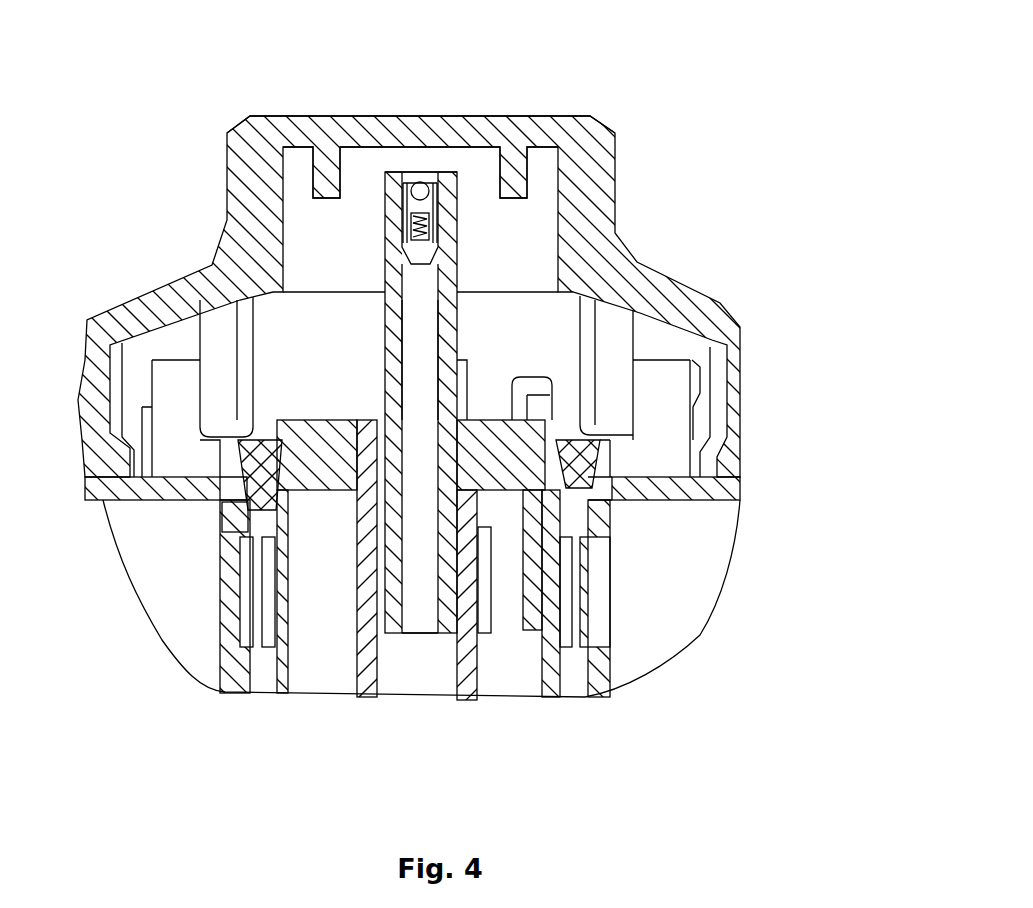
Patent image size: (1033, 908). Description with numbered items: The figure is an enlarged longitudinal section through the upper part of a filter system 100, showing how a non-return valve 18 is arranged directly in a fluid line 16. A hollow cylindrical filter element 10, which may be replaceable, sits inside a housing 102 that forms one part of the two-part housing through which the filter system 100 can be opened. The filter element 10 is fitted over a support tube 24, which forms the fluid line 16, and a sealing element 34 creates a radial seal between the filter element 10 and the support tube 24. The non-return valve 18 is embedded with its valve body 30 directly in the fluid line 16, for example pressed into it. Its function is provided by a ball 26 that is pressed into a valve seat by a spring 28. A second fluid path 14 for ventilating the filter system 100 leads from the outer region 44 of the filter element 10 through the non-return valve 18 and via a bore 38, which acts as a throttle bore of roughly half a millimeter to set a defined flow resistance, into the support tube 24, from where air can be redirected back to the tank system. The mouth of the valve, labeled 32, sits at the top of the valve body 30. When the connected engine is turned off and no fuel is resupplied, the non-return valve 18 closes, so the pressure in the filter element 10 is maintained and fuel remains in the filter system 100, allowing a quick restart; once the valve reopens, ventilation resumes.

The filter element 10 is at (157, 573).
The second fluid path 14 is at (440, 158).
The fluid line 16 is at (413, 610).
The non-return valve 18 is at (516, 454).
The support tube 24 is at (383, 612).
The ball 26 is at (397, 185).
The spring 28 is at (400, 215).
The valve body 30 is at (430, 190).
The opening 32 is at (408, 168).
The sealing element 34 is at (575, 452).
The bore 38 is at (407, 287).
The outer region 44 is at (507, 340).
The filter system 100 is at (516, 454).
The housing 102 is at (637, 280).